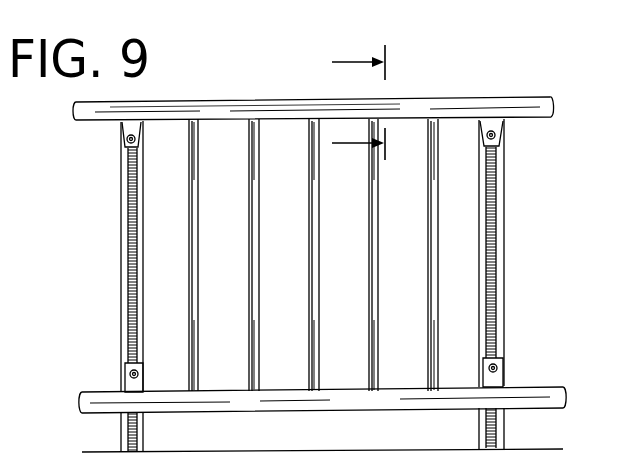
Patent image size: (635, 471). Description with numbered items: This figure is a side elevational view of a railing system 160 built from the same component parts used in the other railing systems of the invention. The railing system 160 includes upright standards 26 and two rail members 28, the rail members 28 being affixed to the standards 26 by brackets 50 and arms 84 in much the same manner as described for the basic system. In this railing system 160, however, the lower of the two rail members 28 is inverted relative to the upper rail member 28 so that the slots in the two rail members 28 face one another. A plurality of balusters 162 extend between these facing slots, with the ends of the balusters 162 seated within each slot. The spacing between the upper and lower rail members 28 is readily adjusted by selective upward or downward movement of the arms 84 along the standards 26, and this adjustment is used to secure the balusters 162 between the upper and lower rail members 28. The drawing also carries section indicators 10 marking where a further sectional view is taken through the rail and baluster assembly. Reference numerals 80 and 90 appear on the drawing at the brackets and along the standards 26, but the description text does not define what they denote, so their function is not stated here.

The section line indicator for FIG. 10 is at (380, 104).
The standard 26 is at (121, 291).
The rail member 28 is at (478, 97).
The bracket 50 is at (118, 128).
The bracket 80 is at (126, 144).
The arm 84 is at (498, 140).
The threaded rod 90 is at (128, 229).
The railing system 160 is at (307, 93).
The baluster 162 is at (367, 379).